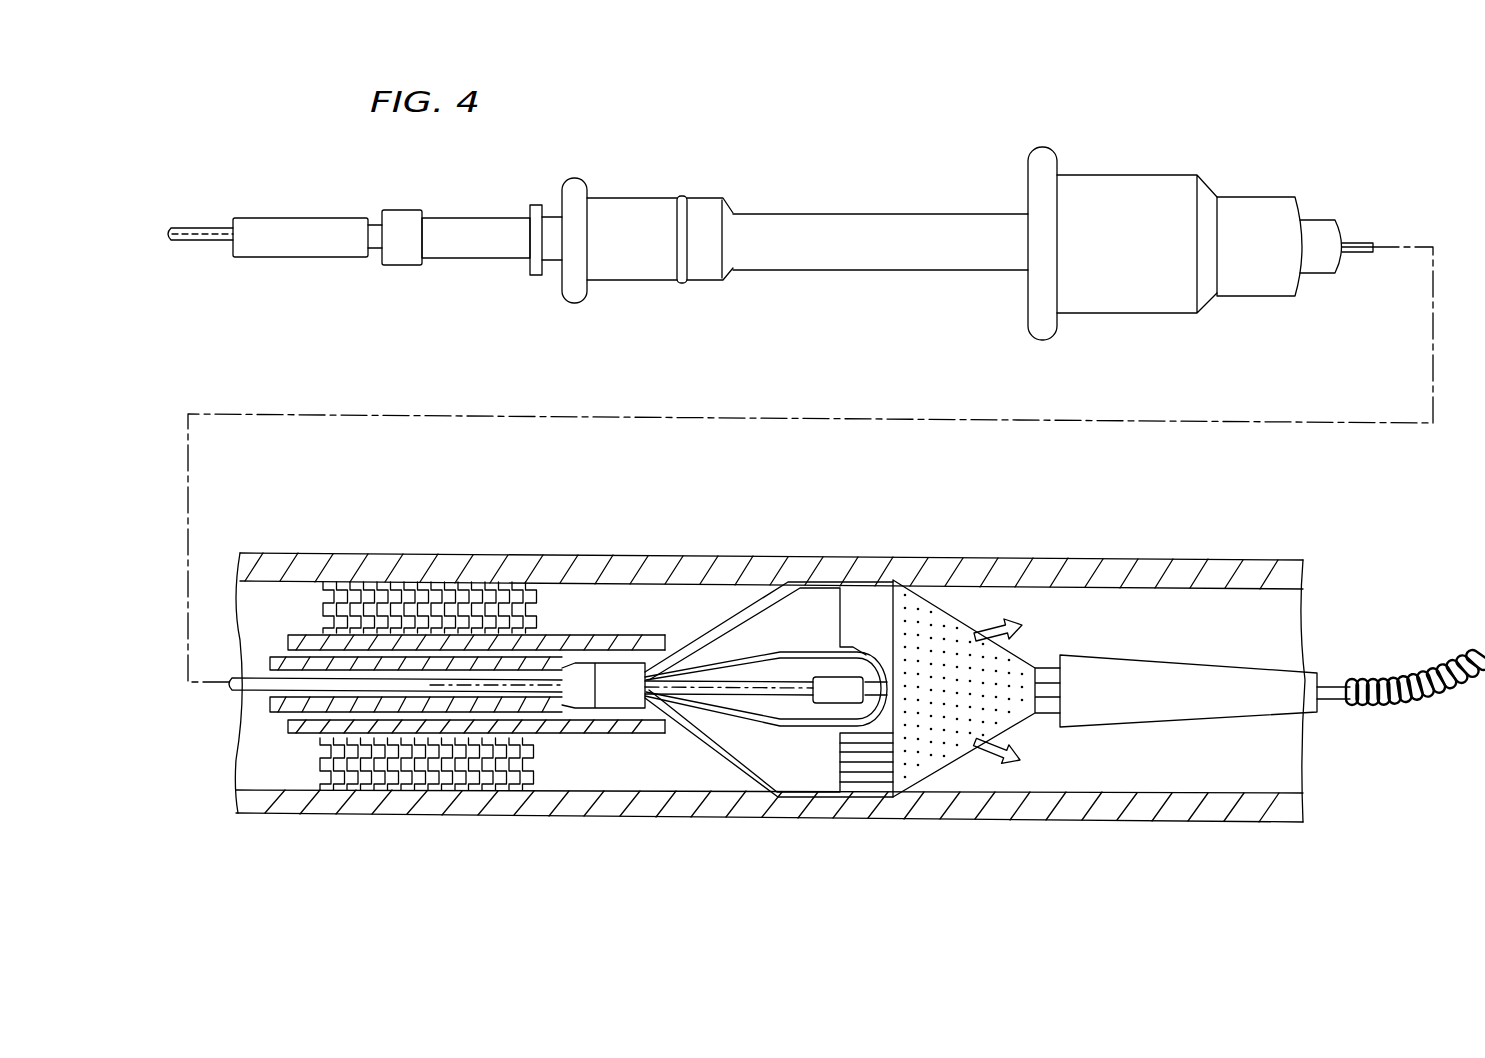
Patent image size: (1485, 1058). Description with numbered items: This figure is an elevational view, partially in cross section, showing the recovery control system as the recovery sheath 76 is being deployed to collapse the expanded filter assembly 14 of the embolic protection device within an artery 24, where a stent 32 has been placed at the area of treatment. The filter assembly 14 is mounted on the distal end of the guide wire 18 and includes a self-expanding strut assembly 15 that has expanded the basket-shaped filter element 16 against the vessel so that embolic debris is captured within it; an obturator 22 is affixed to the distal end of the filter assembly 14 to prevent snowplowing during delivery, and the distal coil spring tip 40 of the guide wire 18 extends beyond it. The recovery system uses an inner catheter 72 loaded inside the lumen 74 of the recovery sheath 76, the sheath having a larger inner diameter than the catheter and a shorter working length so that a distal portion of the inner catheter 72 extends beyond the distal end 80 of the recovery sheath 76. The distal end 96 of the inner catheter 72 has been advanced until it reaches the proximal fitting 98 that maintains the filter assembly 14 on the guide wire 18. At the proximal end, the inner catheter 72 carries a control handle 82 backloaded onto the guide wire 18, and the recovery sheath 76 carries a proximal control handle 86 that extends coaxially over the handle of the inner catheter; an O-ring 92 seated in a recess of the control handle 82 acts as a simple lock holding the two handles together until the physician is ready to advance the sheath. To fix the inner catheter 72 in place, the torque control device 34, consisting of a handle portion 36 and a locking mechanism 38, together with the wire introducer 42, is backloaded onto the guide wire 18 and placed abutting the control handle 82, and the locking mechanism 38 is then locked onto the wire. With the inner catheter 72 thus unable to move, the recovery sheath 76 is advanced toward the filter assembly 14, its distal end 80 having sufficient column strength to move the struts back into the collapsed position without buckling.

The expandable filter assembly 14 is at (722, 762).
The self-expanding strut assembly 15 is at (745, 607).
The filter element 16 is at (920, 628).
The guide wire 18 is at (1358, 242).
The obturator 22 is at (1173, 680).
The artery 24 is at (1262, 576).
The stent 32 is at (408, 590).
The torque control device 34 is at (318, 262).
The handle portion 36 is at (288, 232).
The locking mechanism 38 is at (401, 230).
The distal coil spring tip 40 is at (1405, 706).
The wire introducer 42 is at (475, 243).
The inner catheter 72 is at (862, 237).
The lumen 74 is at (615, 713).
The recovery sheath 76 is at (1252, 228).
The distal end of the recovery sheath 80 is at (670, 652).
The control handle 82 is at (623, 228).
The proximal control handle 86 is at (1122, 215).
The O-ring 92 is at (683, 273).
The distal end of the inner catheter 96 is at (565, 733).
The proximal fitting 98 is at (588, 678).